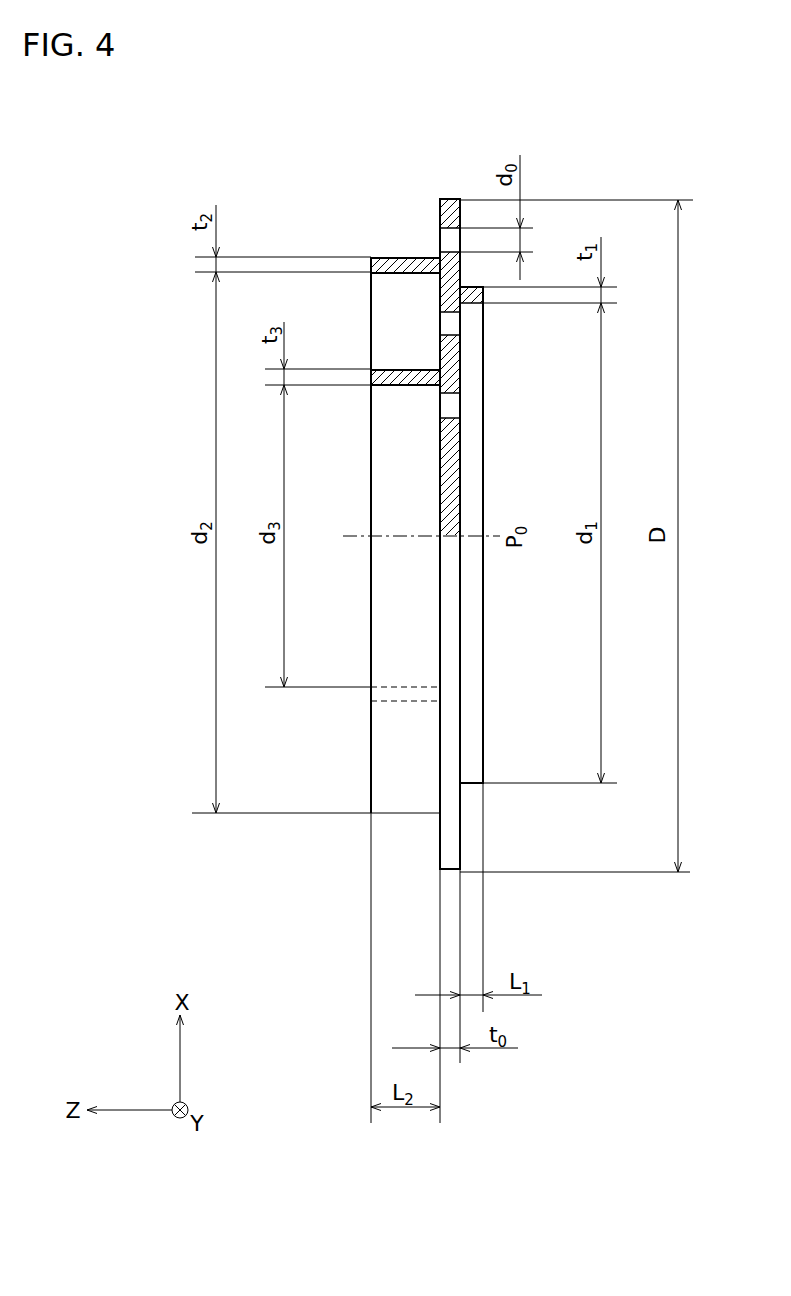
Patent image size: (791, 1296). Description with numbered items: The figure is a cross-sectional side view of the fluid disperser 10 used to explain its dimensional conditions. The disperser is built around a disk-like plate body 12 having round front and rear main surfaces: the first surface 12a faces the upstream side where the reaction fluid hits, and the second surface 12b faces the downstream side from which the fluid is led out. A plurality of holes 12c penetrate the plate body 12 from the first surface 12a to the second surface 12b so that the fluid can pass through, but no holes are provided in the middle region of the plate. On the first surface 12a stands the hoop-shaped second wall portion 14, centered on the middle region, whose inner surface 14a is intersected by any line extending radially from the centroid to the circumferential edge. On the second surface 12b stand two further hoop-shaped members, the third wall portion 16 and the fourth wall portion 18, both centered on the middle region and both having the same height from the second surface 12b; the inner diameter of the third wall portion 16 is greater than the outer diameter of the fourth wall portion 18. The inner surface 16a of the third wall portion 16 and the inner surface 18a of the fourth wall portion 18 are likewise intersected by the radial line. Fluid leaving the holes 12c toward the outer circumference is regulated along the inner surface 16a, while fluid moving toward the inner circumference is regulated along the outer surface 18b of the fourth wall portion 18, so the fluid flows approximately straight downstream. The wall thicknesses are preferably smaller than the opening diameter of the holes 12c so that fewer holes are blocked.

The fluid disperser 10 is at (360, 111).
The plate body 12 is at (448, 199).
The first surface 12a is at (483, 826).
The second surface 12b is at (440, 842).
The holes 12c is at (440, 240).
The second wall portion 14 is at (466, 290).
The inner surface 14a is at (471, 303).
The third wall portion 16 is at (397, 267).
The inner surface 16a is at (400, 273).
The fourth wall portion 18 is at (403, 370).
The inner surface 18a is at (397, 388).
The outer surface 18b is at (383, 371).